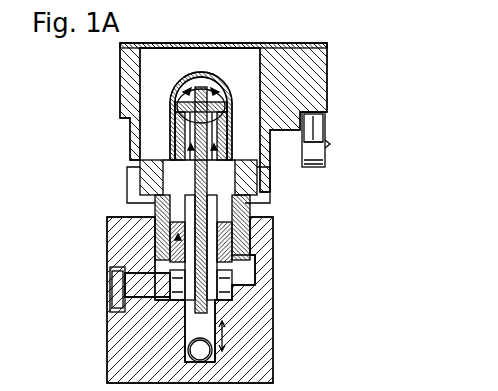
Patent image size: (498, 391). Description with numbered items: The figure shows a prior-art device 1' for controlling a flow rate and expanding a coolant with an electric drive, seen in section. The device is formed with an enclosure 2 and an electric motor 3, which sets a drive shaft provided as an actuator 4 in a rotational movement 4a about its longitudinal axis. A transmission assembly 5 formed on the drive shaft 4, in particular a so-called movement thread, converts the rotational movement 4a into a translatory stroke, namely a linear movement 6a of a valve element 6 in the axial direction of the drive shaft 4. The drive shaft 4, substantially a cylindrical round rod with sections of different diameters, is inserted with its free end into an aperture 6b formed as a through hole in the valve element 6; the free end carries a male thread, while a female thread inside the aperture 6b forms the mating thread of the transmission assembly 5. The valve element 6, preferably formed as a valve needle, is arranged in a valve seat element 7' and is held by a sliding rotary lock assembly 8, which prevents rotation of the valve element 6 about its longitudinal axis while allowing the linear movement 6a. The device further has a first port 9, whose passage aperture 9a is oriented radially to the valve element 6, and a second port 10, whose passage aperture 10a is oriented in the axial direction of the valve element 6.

The device 1' is at (368, 54).
The enclosure 2 is at (245, 236).
The electric motor 3 is at (172, 128).
The drive shaft 4 is at (128, 183).
The rotational movement 4a is at (172, 95).
The transmission assembly 5 is at (125, 258).
The block 6 is at (115, 306).
The linear movement 6a is at (262, 326).
The aperture 6b is at (265, 272).
The valve seat element 7' is at (238, 285).
The sliding rotary lock assembly 8 is at (110, 233).
The first port 9 is at (116, 286).
The passage aperture 9a is at (118, 296).
The second port 10 is at (190, 350).
The passage aperture 10a is at (195, 336).